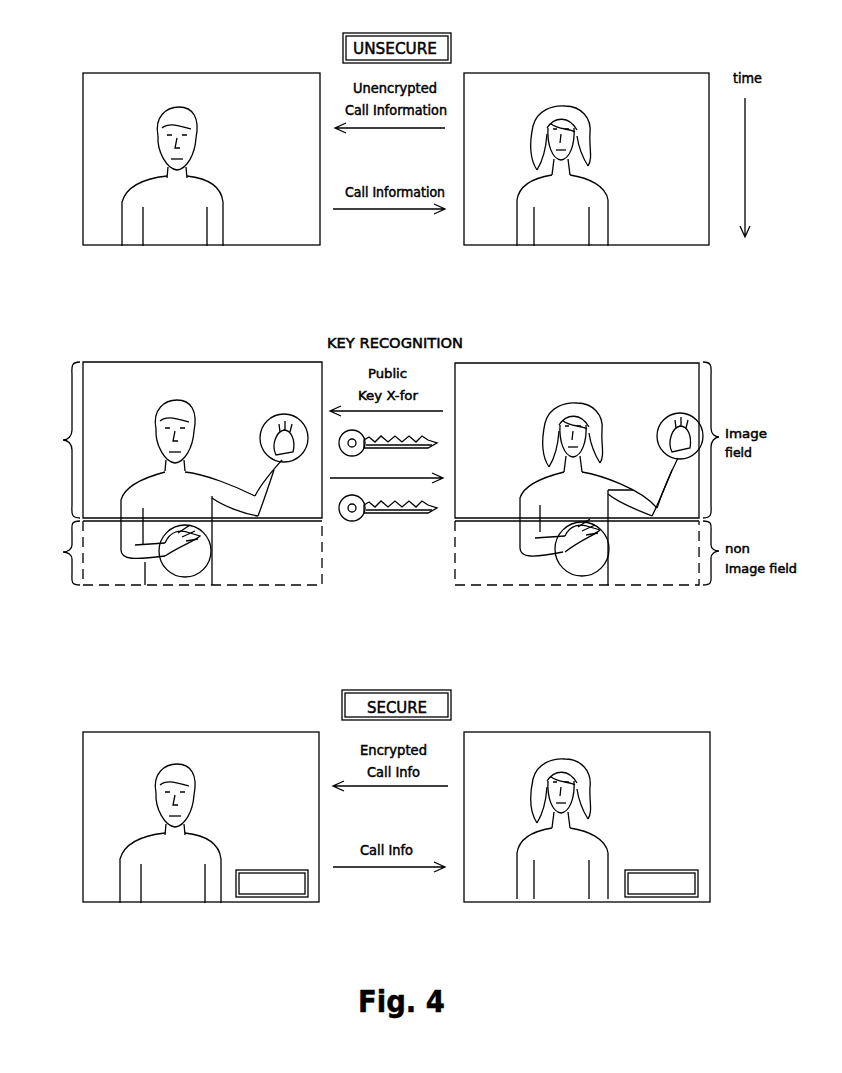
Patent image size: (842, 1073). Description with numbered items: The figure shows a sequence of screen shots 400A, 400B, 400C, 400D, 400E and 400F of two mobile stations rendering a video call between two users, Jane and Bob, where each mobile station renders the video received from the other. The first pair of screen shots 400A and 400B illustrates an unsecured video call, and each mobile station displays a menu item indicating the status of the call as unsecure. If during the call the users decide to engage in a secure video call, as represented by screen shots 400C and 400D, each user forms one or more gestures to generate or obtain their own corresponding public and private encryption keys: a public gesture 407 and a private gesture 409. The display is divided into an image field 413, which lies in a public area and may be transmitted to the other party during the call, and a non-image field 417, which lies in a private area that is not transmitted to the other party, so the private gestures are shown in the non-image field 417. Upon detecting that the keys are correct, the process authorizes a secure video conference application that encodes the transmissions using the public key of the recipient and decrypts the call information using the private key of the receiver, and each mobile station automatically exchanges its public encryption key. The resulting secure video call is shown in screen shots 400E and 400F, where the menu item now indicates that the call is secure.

The screen shot 400A is at (191, 153).
The screen shot 400B is at (586, 154).
The screen shot 400C is at (202, 457).
The screen shot 400D is at (577, 458).
The screen shot 400E is at (191, 800).
The screen shot 400F is at (587, 800).
The public gesture 407 is at (262, 432).
The private gesture 409 is at (185, 577).
The image field 413 is at (51, 440).
The non-image field 417 is at (51, 553).